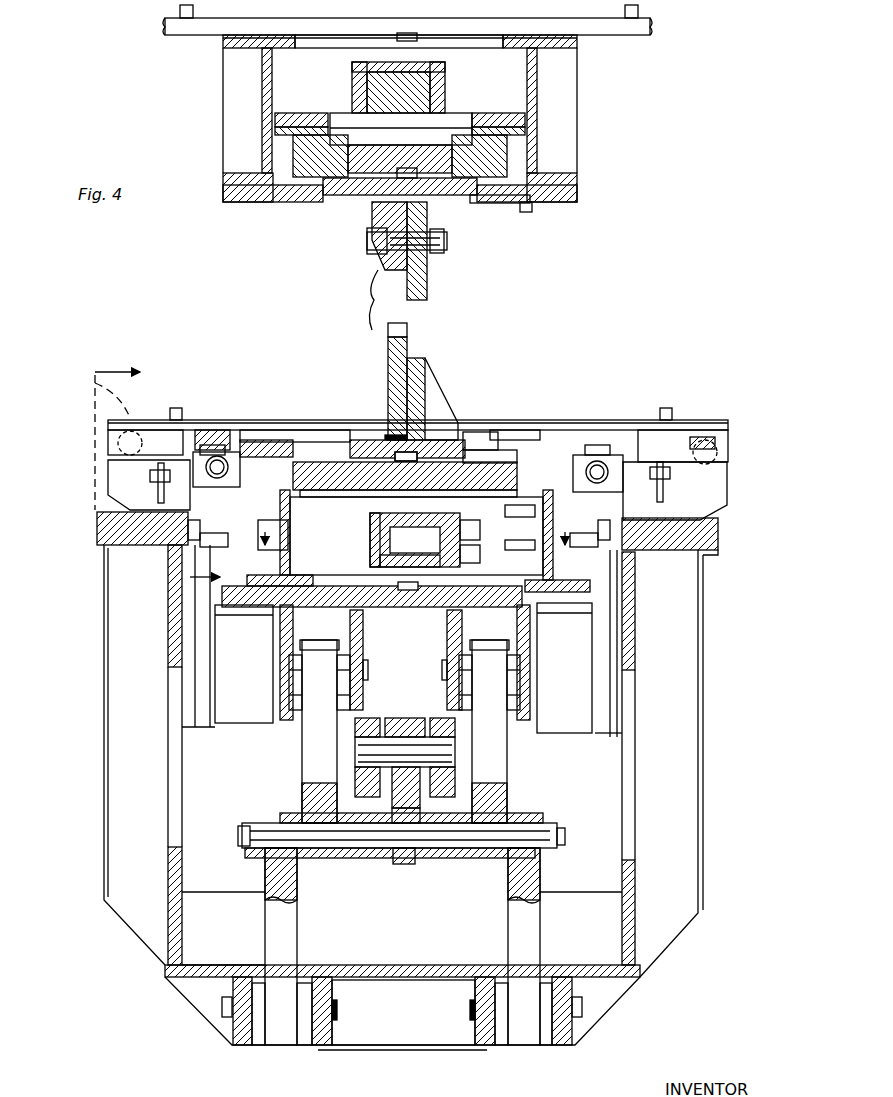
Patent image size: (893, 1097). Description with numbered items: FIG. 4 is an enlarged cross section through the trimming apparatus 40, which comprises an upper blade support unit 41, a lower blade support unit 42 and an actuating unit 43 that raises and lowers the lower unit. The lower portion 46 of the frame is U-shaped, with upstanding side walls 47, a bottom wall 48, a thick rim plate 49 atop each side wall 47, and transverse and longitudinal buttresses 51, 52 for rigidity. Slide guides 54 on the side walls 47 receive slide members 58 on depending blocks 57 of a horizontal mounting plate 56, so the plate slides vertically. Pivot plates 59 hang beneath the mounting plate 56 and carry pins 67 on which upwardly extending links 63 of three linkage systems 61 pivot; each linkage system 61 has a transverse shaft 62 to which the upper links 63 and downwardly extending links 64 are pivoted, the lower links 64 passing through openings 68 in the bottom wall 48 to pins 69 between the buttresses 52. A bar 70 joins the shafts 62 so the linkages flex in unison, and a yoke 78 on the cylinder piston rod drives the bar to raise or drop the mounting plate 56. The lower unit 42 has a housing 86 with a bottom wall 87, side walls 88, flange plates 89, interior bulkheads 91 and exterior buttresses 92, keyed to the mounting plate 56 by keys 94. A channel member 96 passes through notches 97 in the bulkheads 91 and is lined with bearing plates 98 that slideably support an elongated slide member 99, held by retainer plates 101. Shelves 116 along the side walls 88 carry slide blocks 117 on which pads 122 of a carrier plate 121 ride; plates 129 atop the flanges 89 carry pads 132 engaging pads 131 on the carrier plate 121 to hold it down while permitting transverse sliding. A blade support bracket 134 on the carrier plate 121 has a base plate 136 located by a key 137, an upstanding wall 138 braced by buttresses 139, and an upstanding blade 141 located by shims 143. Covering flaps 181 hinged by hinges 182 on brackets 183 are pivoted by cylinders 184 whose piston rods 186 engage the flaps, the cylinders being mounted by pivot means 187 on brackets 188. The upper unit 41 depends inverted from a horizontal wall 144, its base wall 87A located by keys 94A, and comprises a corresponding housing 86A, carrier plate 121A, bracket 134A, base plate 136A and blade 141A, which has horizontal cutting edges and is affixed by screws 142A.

The key 137 is at (188, 36).
The horizontal wall 144 is at (603, 38).
The upper blade support unit 41 is at (605, 118).
The base wall 87A is at (275, 50).
The carrier plate 121A is at (528, 145).
The housing 86A is at (260, 202).
The longitudinal keys 94A is at (397, 173).
The base plate 136A is at (460, 205).
The blade 141A is at (428, 278).
The blade support bracket 134A is at (366, 240).
The screws 142A is at (441, 235).
The trimming apparatus 40 is at (708, 303).
The blade support bracket 134 is at (470, 365).
The upstanding blade 141 is at (390, 344).
The upstanding wall 138 is at (414, 364).
The buttresses 139 is at (440, 395).
The shims 143 is at (388, 433).
The base plate 136 is at (393, 448).
The rectangular plates 129 is at (548, 428).
The pads 132 is at (520, 447).
The pads 131 is at (485, 450).
The flange plates 89 is at (270, 440).
The hinge means 182 is at (92, 384).
The covering flaps 181 is at (222, 430).
The piston rod 186 is at (213, 430).
The pivot means 187 is at (222, 462).
The brackets 183 is at (115, 480).
The bracket 188 is at (200, 498).
The rim plate 49 is at (112, 527).
The lower portion of O-frame 46 is at (722, 530).
The pressure fluid cylinders 184 is at (215, 541).
The exterior buttresses 92 is at (257, 530).
The lower blade support unit 42 is at (220, 355).
The carrier plate 121 is at (405, 476).
The pads 122 is at (480, 495).
The retainer plates 101 is at (395, 510).
The bottom wall 87 is at (290, 572).
The side walls 88 is at (548, 555).
The interior bulkheads 91 is at (416, 536).
The bearing plates 98 is at (372, 535).
The slide member 99 is at (375, 560).
The channel member 96 is at (458, 530).
The notches 97 is at (458, 555).
The shelves 116 is at (497, 515).
The slide blocks 117 is at (536, 536).
The housing 86 is at (280, 600).
The keys 94 is at (405, 595).
The transverse buttresses 51 is at (104, 735).
The slide guides 54 is at (193, 677).
The actuating unit 43 is at (668, 730).
The side walls 47 is at (168, 875).
The depending blocks 57 is at (260, 722).
The slide members 58 is at (215, 726).
The upwardly extending link 63 is at (312, 768).
The pin 67 is at (363, 668).
The pivot plates 59 is at (358, 698).
The mounting plate 56 is at (448, 610).
The yoke 78 is at (445, 775).
The shaft 62 is at (365, 855).
The bar 70 is at (415, 864).
The downwardly extending link 64 is at (268, 912).
The linkage systems 61 is at (556, 880).
The opening 68 is at (308, 962).
The bottom wall 48 is at (400, 970).
The longitudinal buttresses 52 is at (316, 1043).
The pin 69 is at (338, 1005).